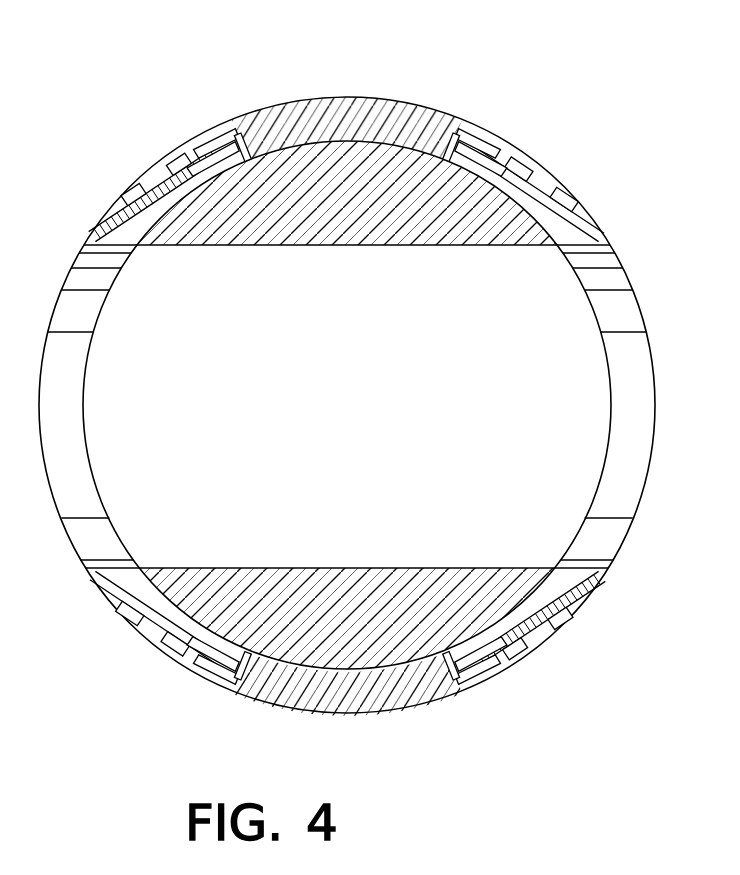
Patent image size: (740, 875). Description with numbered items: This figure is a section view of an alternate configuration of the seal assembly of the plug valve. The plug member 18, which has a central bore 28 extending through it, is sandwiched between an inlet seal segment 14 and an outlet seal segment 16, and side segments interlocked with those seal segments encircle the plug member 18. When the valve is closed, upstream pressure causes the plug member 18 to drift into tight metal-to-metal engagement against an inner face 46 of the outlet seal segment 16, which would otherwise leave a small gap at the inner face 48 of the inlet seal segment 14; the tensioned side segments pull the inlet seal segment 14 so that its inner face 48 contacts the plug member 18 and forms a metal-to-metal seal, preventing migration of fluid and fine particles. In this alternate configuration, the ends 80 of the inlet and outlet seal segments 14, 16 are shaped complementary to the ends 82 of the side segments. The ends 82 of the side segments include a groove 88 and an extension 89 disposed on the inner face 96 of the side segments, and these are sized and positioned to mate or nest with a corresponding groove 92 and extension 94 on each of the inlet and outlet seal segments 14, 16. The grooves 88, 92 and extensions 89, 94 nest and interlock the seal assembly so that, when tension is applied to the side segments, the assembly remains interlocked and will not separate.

The inlet seal segment 14 is at (605, 236).
The outlet seal segment 16 is at (97, 229).
The plug member 18 is at (345, 640).
The central bore 28 is at (365, 248).
The inner face of the outlet seal segment 46 is at (160, 588).
The inner face of the inlet seal segment 48 is at (532, 215).
The ends of the inlet and outlet seal segments 80 is at (458, 625).
The ends of the side segments 82 is at (161, 71).
The groove 88 is at (230, 152).
The extension 89 is at (205, 152).
The groove 92 is at (237, 153).
The extension 94 is at (236, 170).
The inner face of the side segments 96 is at (324, 207).